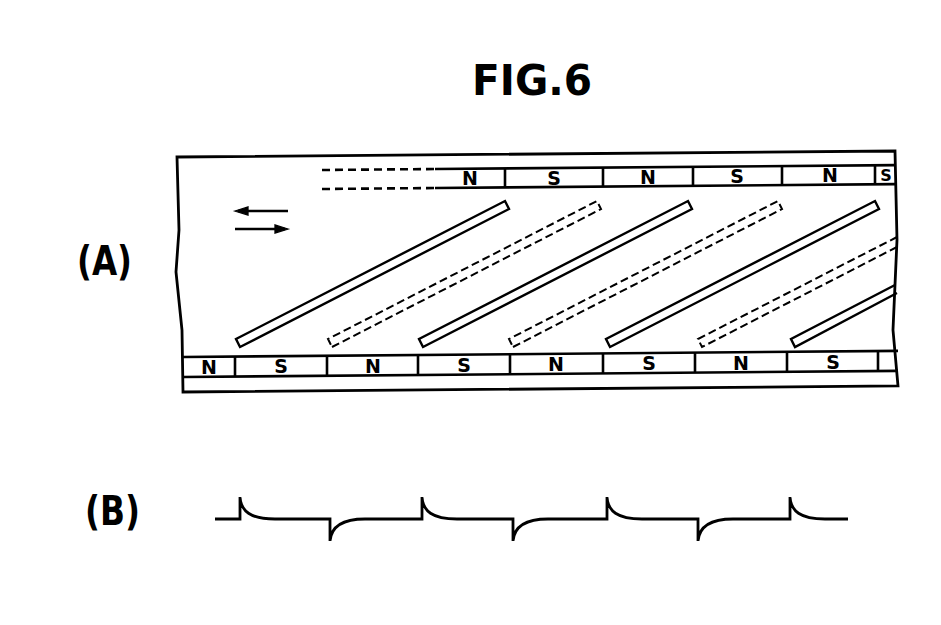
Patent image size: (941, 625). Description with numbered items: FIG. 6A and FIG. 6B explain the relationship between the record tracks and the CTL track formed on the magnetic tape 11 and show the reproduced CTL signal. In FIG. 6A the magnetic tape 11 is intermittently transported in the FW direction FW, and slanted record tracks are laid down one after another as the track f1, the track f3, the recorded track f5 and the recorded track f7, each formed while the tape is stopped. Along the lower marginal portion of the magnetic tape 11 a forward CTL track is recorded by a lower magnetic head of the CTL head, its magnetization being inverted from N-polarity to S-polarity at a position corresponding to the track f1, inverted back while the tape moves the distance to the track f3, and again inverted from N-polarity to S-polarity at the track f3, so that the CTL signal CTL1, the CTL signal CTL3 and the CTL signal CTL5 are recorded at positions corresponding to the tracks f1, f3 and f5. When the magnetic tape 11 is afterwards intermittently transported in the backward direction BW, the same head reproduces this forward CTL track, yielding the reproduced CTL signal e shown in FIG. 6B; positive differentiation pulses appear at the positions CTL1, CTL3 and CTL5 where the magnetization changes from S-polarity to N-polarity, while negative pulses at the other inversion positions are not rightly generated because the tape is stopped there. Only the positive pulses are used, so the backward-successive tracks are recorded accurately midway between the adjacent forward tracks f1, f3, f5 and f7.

In FIG. 6A, the magnetic tape 11 is at (857, 386).
In FIG. 6A, the CTL signal CTL1 is at (235, 378).
In FIG. 6A, the CTL signal CTL3 is at (418, 376).
In FIG. 6A, the control track 5 center line CTL5 is at (604, 374).
In FIG. 6A, the track f1 is at (341, 285).
In FIG. 6A, the track f3 is at (526, 284).
In FIG. 6A, the recorded track f5 is at (714, 284).
In FIG. 6A, the recorded track f7 is at (882, 290).
In FIG. 6A, the FW direction FW is at (261, 211).
In FIG. 6A, the backward direction BW is at (245, 231).
In FIG. 6B, the reproduced CTL signal e is at (263, 518).